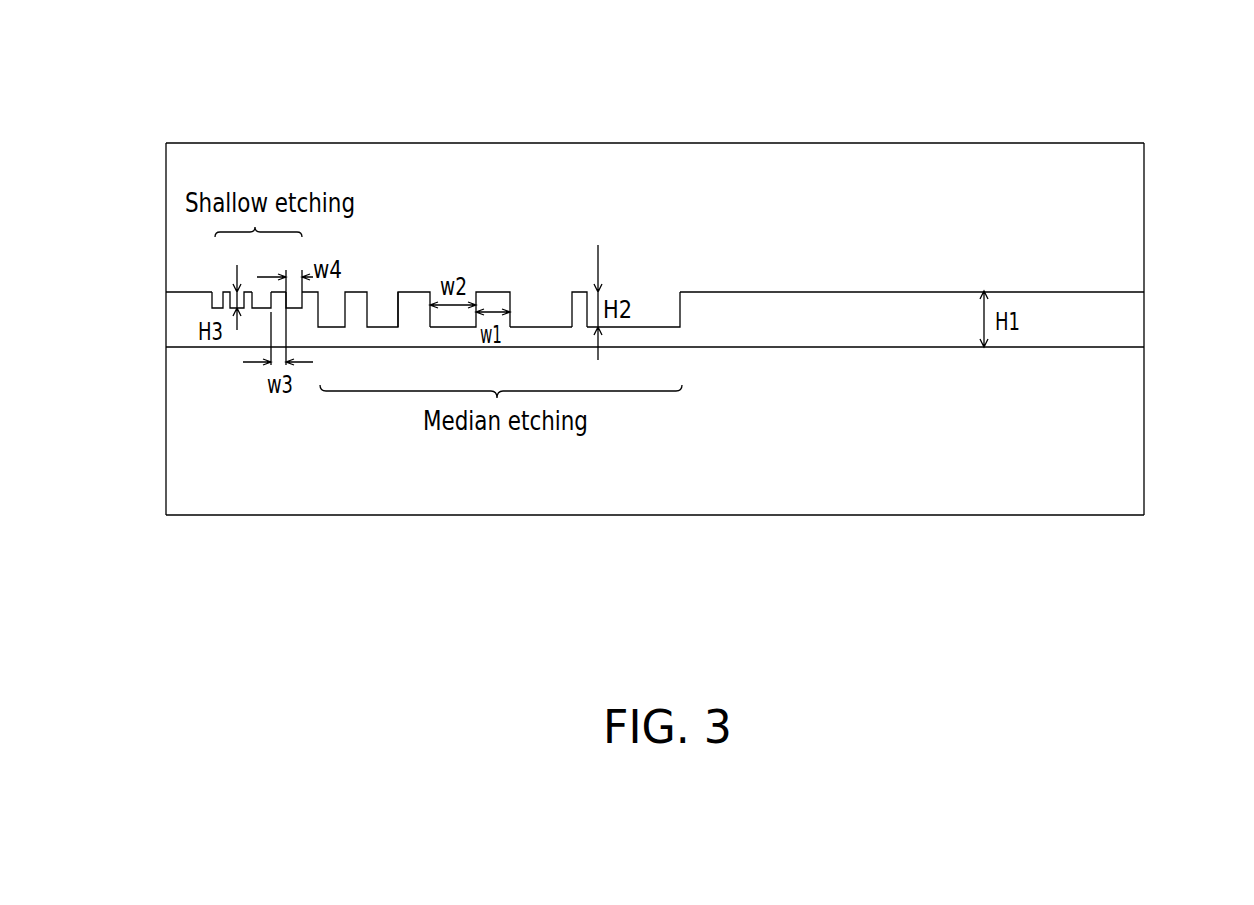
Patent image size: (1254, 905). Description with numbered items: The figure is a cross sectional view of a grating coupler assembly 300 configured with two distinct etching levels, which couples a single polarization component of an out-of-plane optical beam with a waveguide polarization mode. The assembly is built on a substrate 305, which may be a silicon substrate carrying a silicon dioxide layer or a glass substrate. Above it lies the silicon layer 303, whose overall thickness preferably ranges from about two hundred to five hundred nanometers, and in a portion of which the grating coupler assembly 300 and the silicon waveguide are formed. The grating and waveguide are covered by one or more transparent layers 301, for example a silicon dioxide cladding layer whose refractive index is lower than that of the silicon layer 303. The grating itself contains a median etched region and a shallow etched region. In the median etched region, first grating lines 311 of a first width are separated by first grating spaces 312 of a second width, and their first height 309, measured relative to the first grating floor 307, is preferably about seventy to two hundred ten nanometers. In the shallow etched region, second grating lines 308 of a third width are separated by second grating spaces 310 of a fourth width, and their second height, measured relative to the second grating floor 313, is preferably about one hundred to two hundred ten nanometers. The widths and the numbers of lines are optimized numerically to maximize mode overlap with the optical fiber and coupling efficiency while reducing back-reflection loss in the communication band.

The grating coupler assembly 300 is at (214, 72).
The transparent layers 301 is at (1083, 158).
The silicon layer 303 is at (1128, 322).
The substrate 305 is at (1065, 507).
The first grating floor 307 is at (663, 328).
The second grating lines 308 is at (252, 309).
The first height H2 309 is at (645, 303).
The second grating spaces 310 is at (260, 294).
The first grating lines 311 is at (415, 302).
The first grating spaces 312 is at (538, 303).
The second grating floor 313 is at (297, 309).